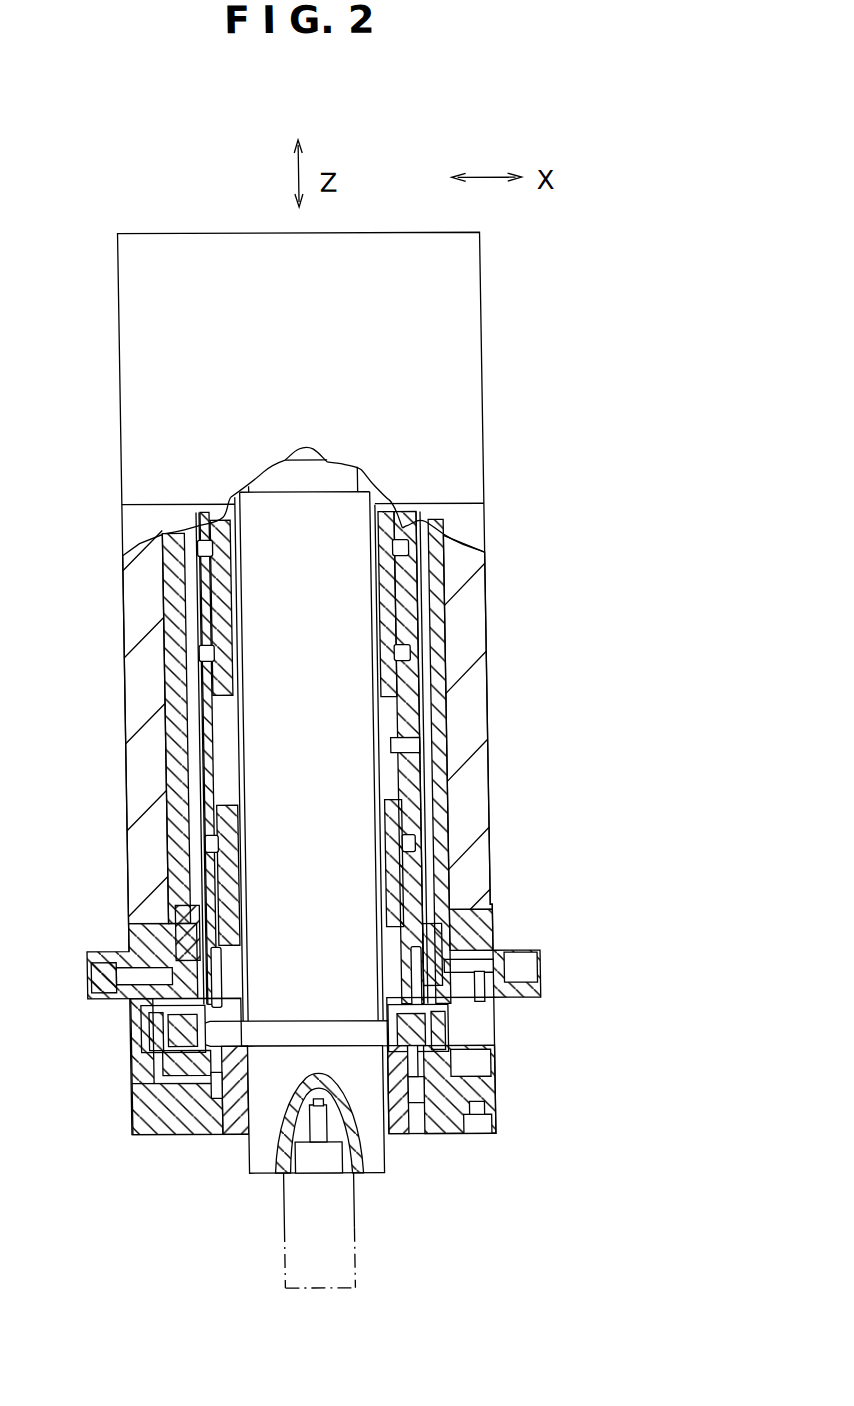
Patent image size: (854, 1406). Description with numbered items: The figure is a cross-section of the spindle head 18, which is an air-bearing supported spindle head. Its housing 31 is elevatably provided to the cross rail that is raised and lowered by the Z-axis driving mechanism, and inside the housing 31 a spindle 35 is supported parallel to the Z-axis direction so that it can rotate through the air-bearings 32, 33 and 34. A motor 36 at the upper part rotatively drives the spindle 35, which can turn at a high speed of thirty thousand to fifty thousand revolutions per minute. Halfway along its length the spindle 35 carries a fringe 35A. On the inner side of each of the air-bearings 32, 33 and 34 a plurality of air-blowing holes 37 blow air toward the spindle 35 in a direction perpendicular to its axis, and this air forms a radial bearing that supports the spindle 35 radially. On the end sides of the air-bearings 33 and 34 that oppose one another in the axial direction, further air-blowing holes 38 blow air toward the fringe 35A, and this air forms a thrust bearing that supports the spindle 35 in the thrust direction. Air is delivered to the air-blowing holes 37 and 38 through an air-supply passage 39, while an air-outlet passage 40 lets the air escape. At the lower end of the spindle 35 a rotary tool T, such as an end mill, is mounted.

The spindle head 18 is at (130, 367).
The housing 31 is at (480, 763).
The air-bearing 32 is at (386, 623).
The air-bearing 33 is at (393, 862).
The air-bearing 34 is at (491, 1083).
The spindle 35 is at (262, 1150).
The fringe 35A is at (316, 1020).
The motor 36 is at (475, 369).
The air-blowing holes 37 is at (395, 545).
The air-blowing holes 38 is at (160, 1031).
The air-supply passage 39 is at (188, 770).
The air-outlet passage 40 is at (432, 793).
The rotary tool T is at (347, 1237).